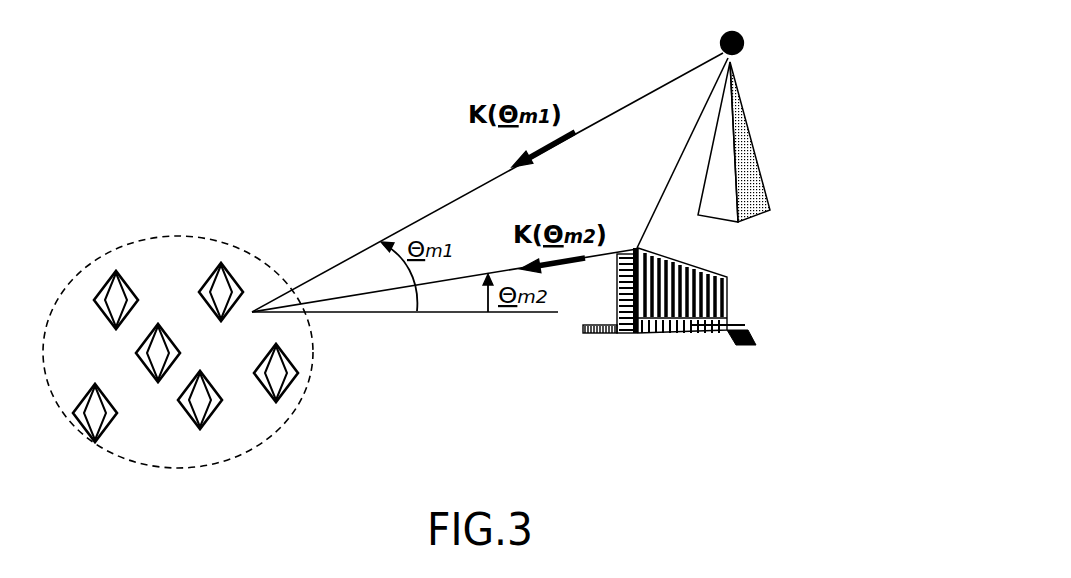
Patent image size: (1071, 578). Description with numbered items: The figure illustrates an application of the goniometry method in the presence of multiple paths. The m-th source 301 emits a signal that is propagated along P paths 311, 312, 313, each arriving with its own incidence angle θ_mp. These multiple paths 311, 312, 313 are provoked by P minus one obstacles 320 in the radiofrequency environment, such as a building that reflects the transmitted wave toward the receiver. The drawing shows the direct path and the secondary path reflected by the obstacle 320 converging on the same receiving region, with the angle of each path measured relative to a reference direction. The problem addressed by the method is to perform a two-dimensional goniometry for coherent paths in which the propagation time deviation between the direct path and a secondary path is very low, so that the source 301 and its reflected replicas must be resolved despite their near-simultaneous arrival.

The source 301 is at (744, 35).
The path 311 is at (339, 258).
The path 312 is at (458, 276).
The path 313 is at (342, 313).
The obstacle 320 is at (660, 347).